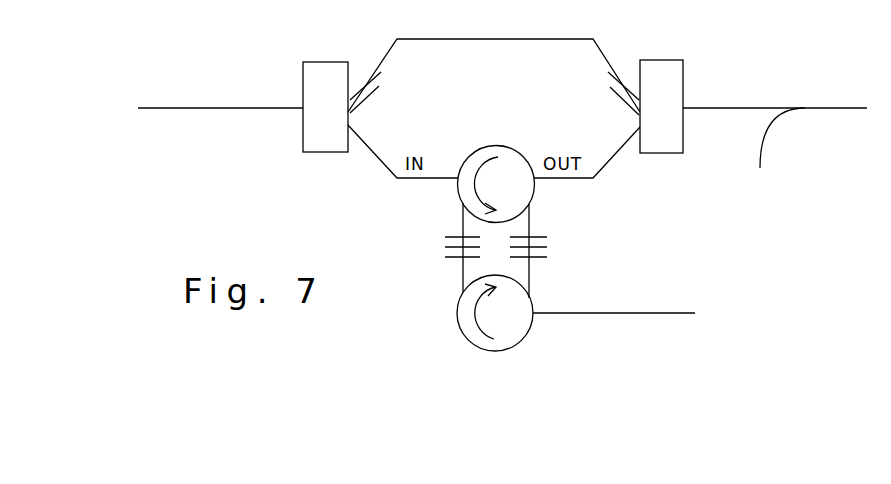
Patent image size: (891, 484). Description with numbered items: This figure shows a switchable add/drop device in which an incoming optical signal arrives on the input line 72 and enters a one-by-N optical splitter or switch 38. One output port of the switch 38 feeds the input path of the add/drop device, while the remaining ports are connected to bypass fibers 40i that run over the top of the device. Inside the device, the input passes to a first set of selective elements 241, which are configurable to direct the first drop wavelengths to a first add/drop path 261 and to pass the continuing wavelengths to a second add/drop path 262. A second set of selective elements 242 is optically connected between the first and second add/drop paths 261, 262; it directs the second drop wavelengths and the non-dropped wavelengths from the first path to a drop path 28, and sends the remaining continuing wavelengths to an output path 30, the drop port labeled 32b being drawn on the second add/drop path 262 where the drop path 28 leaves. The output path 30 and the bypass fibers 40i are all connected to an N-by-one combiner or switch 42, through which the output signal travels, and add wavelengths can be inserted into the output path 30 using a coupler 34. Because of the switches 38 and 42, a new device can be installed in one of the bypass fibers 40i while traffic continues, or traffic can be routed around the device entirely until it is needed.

The input fiber 72 is at (217, 108).
The 1×N optical splitter or switch 38 is at (323, 152).
The bypass fibers 40i is at (494, 60).
The N×1 combiner or switch 42 is at (663, 153).
The output path 30 is at (752, 108).
The coupler 34 is at (828, 108).
The first add/drop path 261 is at (533, 195).
The first set of selective elements 241 is at (445, 240).
The second set of selective elements 242 is at (547, 245).
The second add/drop path 262 is at (487, 275).
The drop path 28 is at (663, 313).
The circulator port 32b is at (495, 348).